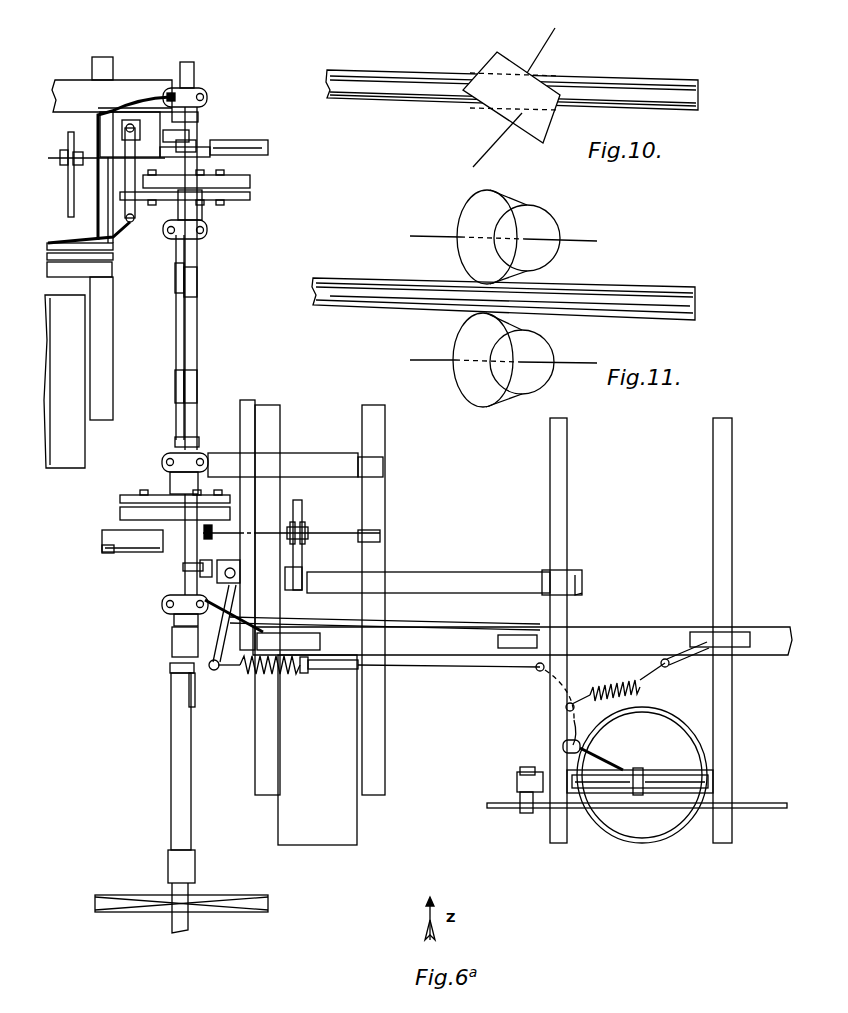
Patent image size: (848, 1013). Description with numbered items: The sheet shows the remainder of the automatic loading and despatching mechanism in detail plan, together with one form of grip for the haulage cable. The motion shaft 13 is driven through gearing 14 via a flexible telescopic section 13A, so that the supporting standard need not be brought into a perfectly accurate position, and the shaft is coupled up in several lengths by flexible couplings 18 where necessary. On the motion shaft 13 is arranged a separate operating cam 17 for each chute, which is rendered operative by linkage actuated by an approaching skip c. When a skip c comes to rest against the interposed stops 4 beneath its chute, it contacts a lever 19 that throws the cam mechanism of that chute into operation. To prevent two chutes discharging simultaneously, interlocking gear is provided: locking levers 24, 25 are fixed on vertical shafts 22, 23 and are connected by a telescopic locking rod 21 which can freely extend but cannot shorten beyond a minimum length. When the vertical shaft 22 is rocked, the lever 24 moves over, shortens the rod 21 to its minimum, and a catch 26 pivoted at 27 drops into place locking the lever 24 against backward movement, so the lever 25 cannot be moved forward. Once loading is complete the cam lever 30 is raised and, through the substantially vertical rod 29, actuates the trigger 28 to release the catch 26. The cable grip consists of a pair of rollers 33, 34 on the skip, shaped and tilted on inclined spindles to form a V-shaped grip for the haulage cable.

In FIG. 6A, the stops 4 is at (537, 770).
In FIG. 6A, the motion shaft 13 is at (177, 573).
In FIG. 6A, the flexible telescopic section 13A is at (185, 772).
In FIG. 6A, the gearing 14 is at (227, 903).
In FIG. 6A, the operating cam 17 is at (233, 180).
In FIG. 6A, the flexible couplings 18 is at (188, 283).
In FIG. 6A, the lever 19 is at (622, 778).
In FIG. 6A, the telescopic locking rod 21 is at (182, 342).
In FIG. 6A, the vertical shaft 22 is at (235, 572).
In FIG. 6A, the vertical shaft 23 is at (131, 124).
In FIG. 6A, the locking lever 24 is at (207, 565).
In FIG. 6A, the locking lever 25 is at (157, 130).
In FIG. 6A, the catch 26 is at (193, 120).
In FIG. 6A, the pivot 27 is at (172, 97).
In FIG. 6A, the trigger 28 is at (187, 147).
In FIG. 6A, the vertical rod 29 is at (243, 145).
In FIG. 6A, the cam lever 30 is at (55, 150).
In FIG. 11, the roller 33 is at (483, 265).
In FIG. 10, the roller 34 is at (520, 116).
In FIG. 11, the roller 34 is at (482, 388).
In FIG. 6A, the skip c is at (667, 827).